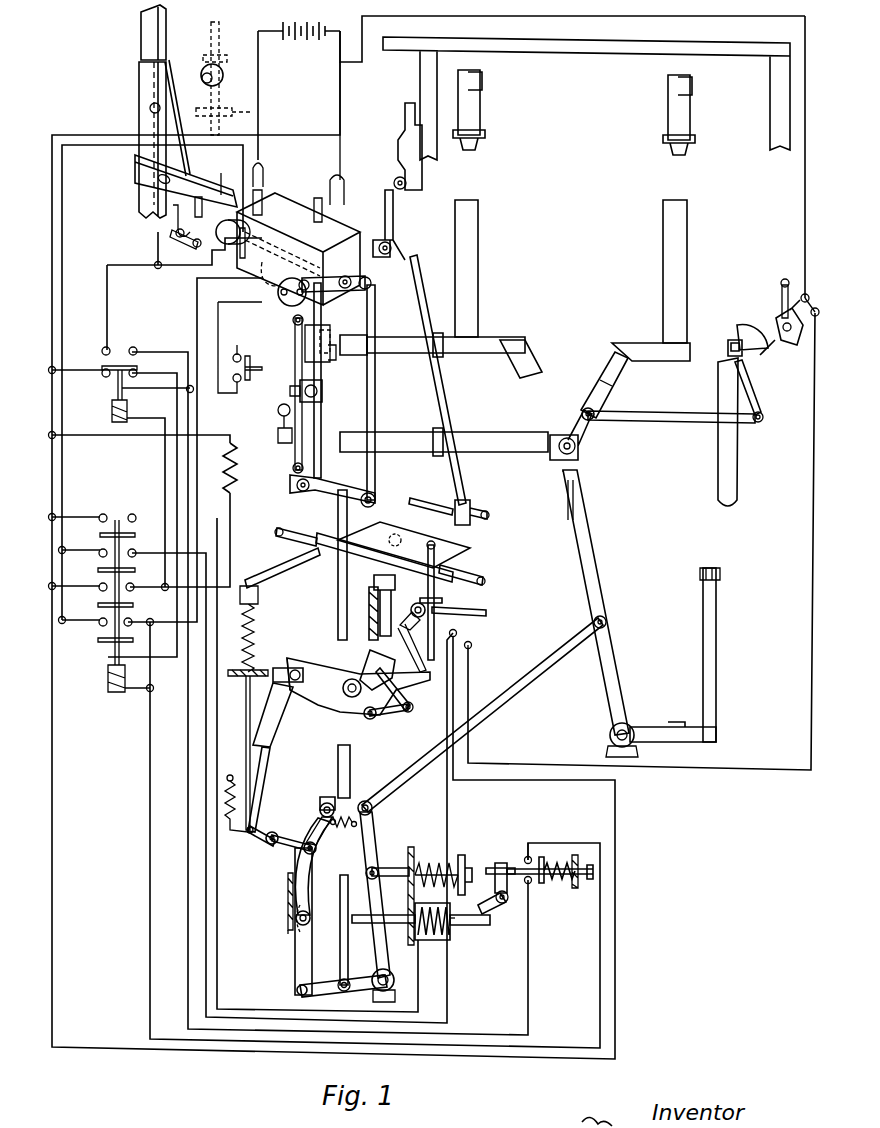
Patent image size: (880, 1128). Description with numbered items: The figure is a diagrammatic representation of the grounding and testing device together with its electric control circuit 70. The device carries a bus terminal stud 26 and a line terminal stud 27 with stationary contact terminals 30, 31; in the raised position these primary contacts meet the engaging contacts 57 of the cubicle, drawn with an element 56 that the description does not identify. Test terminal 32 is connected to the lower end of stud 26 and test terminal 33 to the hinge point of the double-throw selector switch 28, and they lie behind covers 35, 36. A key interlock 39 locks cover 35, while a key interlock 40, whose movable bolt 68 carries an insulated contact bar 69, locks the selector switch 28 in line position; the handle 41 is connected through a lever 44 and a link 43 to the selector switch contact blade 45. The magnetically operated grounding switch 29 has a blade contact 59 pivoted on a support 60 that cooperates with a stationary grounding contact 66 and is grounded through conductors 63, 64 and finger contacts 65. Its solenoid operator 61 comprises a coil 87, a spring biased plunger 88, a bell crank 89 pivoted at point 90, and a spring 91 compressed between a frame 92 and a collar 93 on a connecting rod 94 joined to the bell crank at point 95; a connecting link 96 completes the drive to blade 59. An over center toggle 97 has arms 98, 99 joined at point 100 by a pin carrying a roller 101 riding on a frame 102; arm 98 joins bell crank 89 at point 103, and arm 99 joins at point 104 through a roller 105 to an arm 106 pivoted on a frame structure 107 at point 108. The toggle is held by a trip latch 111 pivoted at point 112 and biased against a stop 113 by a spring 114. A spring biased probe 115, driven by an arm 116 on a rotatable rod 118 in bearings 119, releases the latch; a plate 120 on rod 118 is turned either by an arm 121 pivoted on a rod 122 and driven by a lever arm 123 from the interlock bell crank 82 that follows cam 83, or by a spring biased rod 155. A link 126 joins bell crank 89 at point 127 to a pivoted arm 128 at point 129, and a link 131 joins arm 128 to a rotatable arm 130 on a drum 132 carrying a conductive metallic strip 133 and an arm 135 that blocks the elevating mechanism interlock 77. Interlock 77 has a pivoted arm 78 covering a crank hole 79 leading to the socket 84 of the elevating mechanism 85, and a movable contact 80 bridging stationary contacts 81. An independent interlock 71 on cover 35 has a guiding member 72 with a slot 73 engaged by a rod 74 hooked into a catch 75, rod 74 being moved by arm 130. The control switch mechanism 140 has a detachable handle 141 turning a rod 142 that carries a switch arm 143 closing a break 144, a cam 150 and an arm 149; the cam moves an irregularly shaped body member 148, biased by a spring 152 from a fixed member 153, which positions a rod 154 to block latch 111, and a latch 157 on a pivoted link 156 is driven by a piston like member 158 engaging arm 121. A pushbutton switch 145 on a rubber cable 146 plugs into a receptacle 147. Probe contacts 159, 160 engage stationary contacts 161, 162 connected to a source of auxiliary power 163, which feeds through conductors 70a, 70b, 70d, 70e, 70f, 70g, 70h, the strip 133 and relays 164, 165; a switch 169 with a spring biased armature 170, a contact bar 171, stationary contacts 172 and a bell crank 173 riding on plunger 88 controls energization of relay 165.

The bus terminal stud 26 is at (478, 232).
The line terminal stud 27 is at (663, 226).
The double-throw selector switch 28 is at (580, 399).
The magnetically operated grounding switch 29 is at (655, 645).
The stationary contact terminal 30 is at (512, 376).
The stationary contact terminal 31 is at (612, 348).
The test terminal 32 is at (392, 337).
The test terminal 33 is at (352, 432).
The cover 35 is at (305, 352).
The cover 36 is at (284, 443).
The key interlock 39 is at (290, 388).
The key interlock 40 is at (775, 315).
The handle 41 is at (738, 456).
The link 43 is at (670, 418).
The lever 44 is at (752, 396).
The selector switch contact blade 45 is at (608, 394).
The bus bar 56 is at (590, 50).
The engaging contacts 57 is at (482, 92).
The grounding contact blade 59 is at (600, 556).
The support 60 is at (610, 740).
The solenoid operator 61 is at (473, 947).
The conductor 63 is at (655, 727).
The conductor 64 is at (716, 666).
The finger contacts 65 is at (720, 576).
The stationary grounding contact 66 is at (582, 470).
The bolt 68 is at (768, 350).
The contact bar 69 is at (812, 284).
The electric control circuit 70 is at (815, 468).
The conductor 70a is at (56, 226).
The conductor 70b is at (542, 765).
The conductor 70d is at (158, 240).
The conductor 70e is at (160, 268).
The conductor 70f is at (197, 330).
The conductor 70g is at (168, 492).
The conductor 70h is at (62, 296).
The independent interlock 71 is at (284, 337).
The guiding member 72 is at (334, 362).
The slot 73 is at (322, 392).
The rod 74 is at (326, 334).
The catch 75 is at (353, 345).
The elevating mechanism interlock 77 is at (130, 107).
The arm 78 is at (184, 168).
The crank hole 79 is at (150, 110).
The movable contact 80 is at (180, 247).
The stationary contacts 81 is at (186, 218).
The interlock bell crank 82 is at (392, 222).
The cam 83 is at (400, 145).
The socket 84 is at (206, 72).
The elevating mechanism 85 is at (250, 78).
The coil 87 is at (428, 940).
The plunger 88 is at (360, 924).
The bell crank 89 is at (380, 900).
The pivot point 90 is at (392, 974).
The spring 91 is at (432, 862).
The frame 92 is at (410, 846).
The collar 93 is at (464, 856).
The connecting rod 94 is at (392, 868).
The pivot point 95 is at (368, 880).
The connecting link 96 is at (414, 776).
The over center toggle 97 is at (335, 901).
The arm 98 is at (295, 954).
The arm 99 is at (288, 884).
The pivot point 100 is at (296, 918).
The roller 101 is at (310, 920).
The frame 102 is at (288, 898).
The pivot point 103 is at (297, 988).
The pivot point 104 is at (290, 852).
The roller 105 is at (316, 850).
The arm 106 is at (320, 810).
The frame structure 107 is at (324, 796).
The pivot point 108 is at (358, 806).
The trip latch 111 is at (300, 826).
The pivot point 112 is at (274, 832).
The stop 113 is at (272, 846).
The spring 114 is at (230, 776).
The spring biased probe 115 is at (248, 688).
The arm 116 is at (284, 574).
The rotatable rod 118 is at (276, 532).
The bearings 119 is at (302, 536).
The plate 120 is at (388, 528).
The arm 121 is at (428, 506).
The rod 122 is at (488, 510).
The lever arm 123 is at (446, 418).
The link 126 is at (338, 606).
The connection point 127 is at (342, 990).
The arm 128 is at (310, 496).
The connection point 129 is at (330, 484).
The rotatable arm 130 is at (380, 270).
The link 131 is at (372, 404).
The drum 132 is at (338, 265).
The conductive metallic strip 133 is at (256, 226).
The arm 135 is at (222, 190).
The control switch mechanism 140 is at (322, 747).
The detachable handle 141 is at (350, 766).
The rod 142 is at (416, 604).
The switch arm 143 is at (486, 611).
The break 144 is at (504, 630).
The pushbutton switch 145 is at (240, 394).
The rubber cable 146 is at (228, 344).
The receptacle 147 is at (278, 290).
The body member 148 is at (318, 662).
The arm 149 is at (402, 684).
The cam 150 is at (360, 660).
The spring 152 is at (276, 712).
The fixed member 153 is at (278, 668).
The rod 154 is at (264, 778).
The spring biased rod 155 is at (470, 648).
The link 156 is at (398, 714).
The latch 157 is at (410, 708).
The piston like member 158 is at (374, 582).
The probe contact 159 is at (266, 192).
The probe contact 160 is at (326, 222).
The stationary contact 161 is at (260, 162).
The stationary contact 162 is at (330, 180).
The source of auxiliary power 163 is at (292, 30).
The solenoid operated relay 164 is at (110, 616).
The solenoid operated relay 165 is at (127, 404).
The switch 169 is at (575, 917).
The armature 170 is at (552, 858).
The contact bar 171 is at (546, 880).
The stationary contacts 172 is at (526, 854).
The bell crank 173 is at (488, 910).